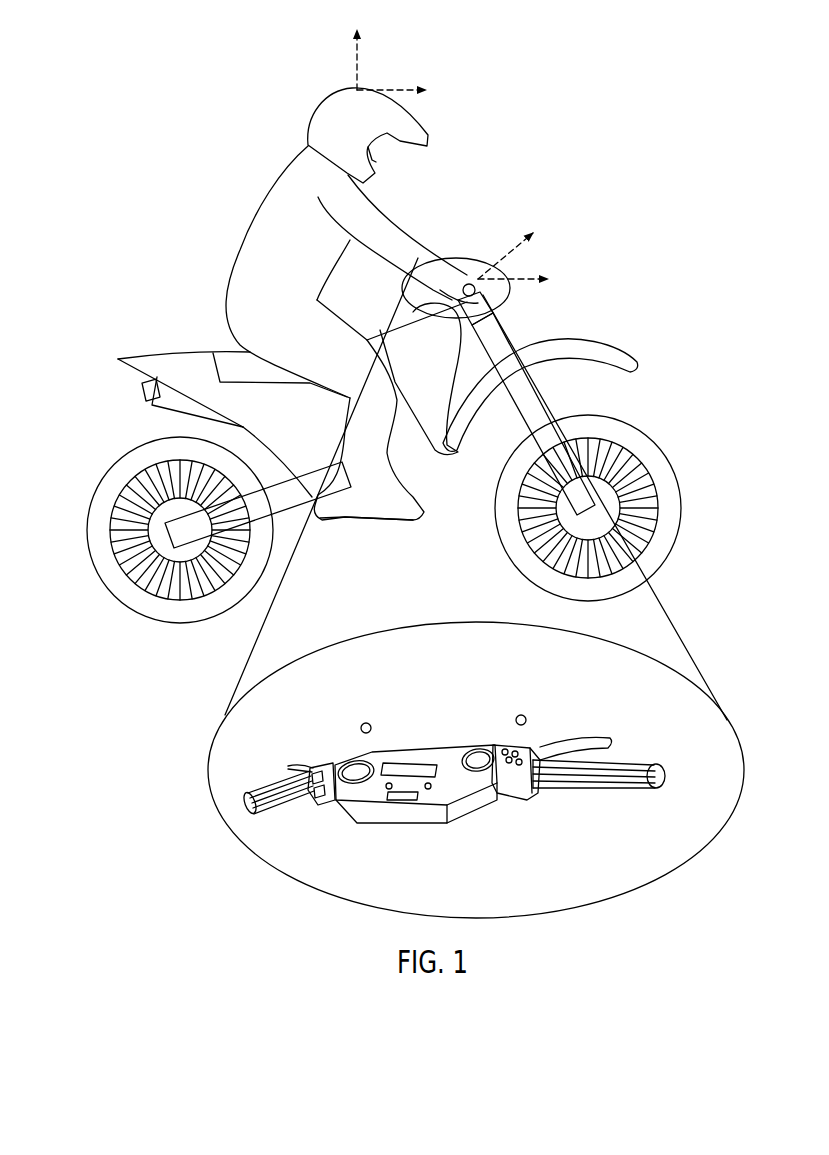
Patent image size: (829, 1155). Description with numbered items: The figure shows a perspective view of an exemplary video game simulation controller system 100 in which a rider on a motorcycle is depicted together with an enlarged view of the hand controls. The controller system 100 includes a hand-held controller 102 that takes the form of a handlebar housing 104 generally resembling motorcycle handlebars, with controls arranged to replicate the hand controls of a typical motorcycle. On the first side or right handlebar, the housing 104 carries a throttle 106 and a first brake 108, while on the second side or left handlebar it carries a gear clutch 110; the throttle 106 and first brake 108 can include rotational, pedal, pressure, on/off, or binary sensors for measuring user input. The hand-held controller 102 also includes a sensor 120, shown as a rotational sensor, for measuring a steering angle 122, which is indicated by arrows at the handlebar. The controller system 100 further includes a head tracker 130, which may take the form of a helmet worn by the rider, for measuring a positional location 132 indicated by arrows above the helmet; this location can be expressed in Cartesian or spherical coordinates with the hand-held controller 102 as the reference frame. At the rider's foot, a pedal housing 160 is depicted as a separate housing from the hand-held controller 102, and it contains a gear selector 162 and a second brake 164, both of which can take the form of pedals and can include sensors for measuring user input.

The video game simulation controller system 100 is at (574, 101).
The hand-held controller 102 is at (513, 787).
The handlebar housing 104 is at (292, 828).
The throttle 106 is at (659, 744).
The first brake 108 is at (575, 731).
The gear clutch 110 is at (314, 746).
The sensor 120 is at (531, 708).
The steering angle 122 is at (475, 275).
The head tracker 130 is at (384, 90).
The positional location 132 is at (360, 86).
The pedal housing 160 is at (350, 566).
The gear selector 162 is at (366, 566).
The second brake 164 is at (350, 520).